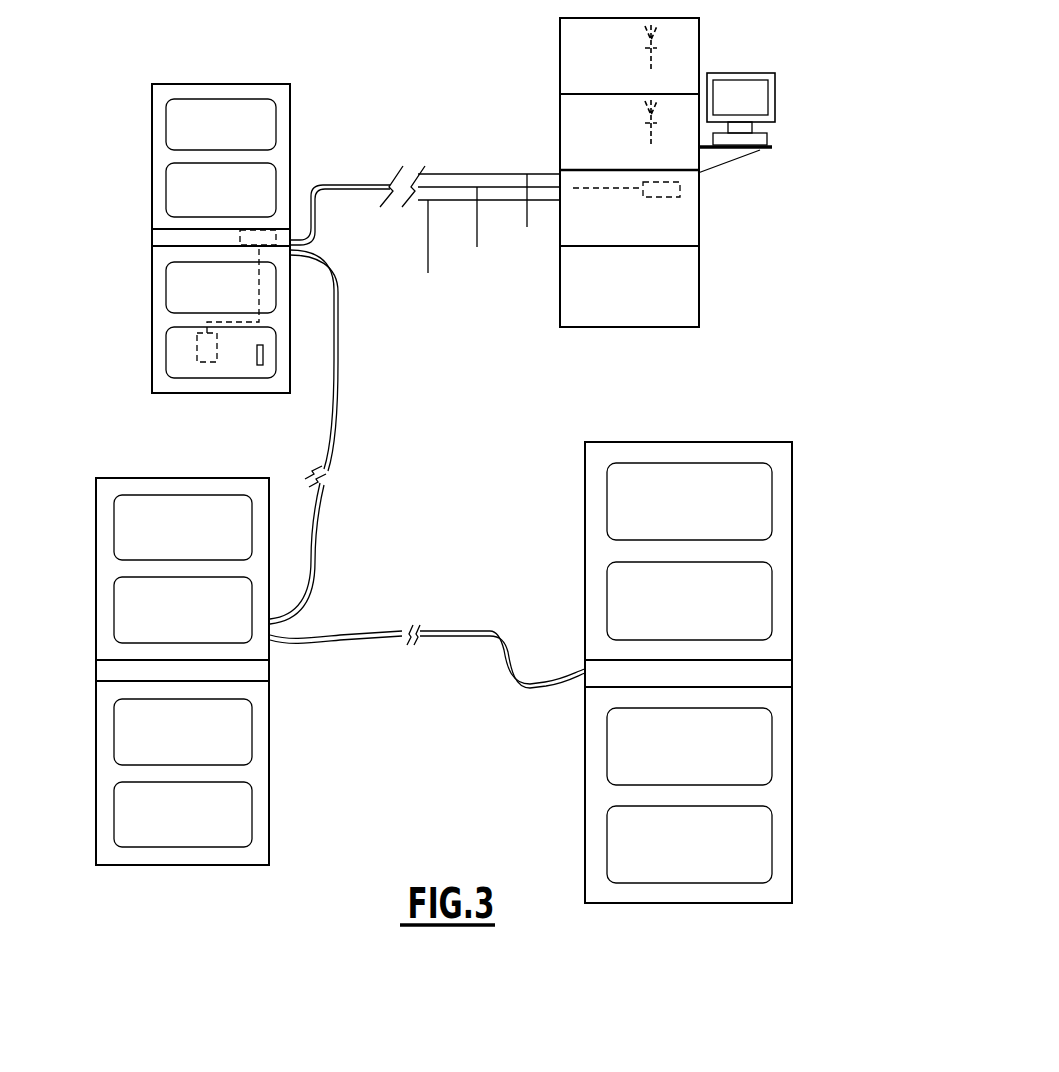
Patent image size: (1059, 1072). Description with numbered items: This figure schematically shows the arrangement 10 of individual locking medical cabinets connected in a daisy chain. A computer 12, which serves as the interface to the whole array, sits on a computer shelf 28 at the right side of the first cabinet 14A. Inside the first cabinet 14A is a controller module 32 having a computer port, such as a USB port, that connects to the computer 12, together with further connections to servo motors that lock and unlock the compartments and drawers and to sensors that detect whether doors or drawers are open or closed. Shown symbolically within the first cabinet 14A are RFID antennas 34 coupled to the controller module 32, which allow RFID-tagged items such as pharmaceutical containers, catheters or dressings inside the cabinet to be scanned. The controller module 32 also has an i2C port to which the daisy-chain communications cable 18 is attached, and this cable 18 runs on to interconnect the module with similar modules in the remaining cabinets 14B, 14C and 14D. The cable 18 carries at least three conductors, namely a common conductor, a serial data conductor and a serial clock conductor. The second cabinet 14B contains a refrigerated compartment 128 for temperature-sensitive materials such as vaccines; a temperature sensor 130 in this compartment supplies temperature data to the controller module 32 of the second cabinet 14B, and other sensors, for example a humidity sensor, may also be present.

The arrangement of individual locking cabinets 10 is at (800, 113).
The computer 12 is at (776, 78).
The first cabinet 14A is at (699, 243).
The second cabinet 14B is at (291, 138).
The cabinet 14C is at (96, 668).
The cabinet 14D is at (788, 777).
The daisy-chain i2C cable 18 is at (446, 152).
The computer shelf 28 is at (745, 155).
The controller module 32 is at (250, 232).
The RFID antenna 34 is at (645, 50).
The refrigerated compartment 128 is at (152, 380).
The sensor 130 is at (197, 353).